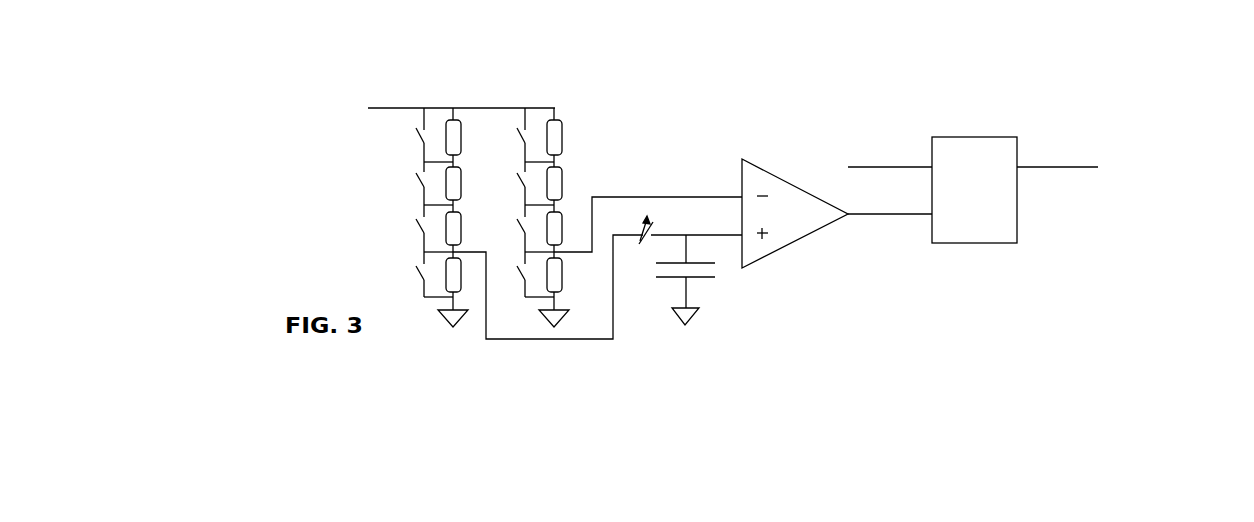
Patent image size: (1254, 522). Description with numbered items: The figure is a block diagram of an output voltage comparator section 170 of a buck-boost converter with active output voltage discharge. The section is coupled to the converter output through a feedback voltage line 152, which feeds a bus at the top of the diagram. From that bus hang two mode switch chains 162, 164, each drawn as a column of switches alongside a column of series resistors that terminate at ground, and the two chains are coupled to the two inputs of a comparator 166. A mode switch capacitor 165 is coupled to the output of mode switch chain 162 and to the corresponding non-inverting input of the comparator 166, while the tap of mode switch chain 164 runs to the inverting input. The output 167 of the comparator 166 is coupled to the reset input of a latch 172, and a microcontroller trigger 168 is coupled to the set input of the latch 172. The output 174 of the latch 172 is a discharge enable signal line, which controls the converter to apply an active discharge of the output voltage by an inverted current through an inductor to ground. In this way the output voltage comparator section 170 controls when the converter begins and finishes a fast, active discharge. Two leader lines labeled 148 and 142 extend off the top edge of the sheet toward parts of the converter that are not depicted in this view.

The output voltage comparator section 170 is at (750, 176).
The feedback voltage line 152 is at (451, 133).
The mode switch chain 162 is at (442, 181).
The mode switch chain 164 is at (543, 181).
The mode switch capacitor 165 is at (700, 293).
The comparator 166 is at (795, 198).
The output of the comparator 167 is at (890, 252).
The microcontroller trigger 168 is at (870, 120).
The latch 172 is at (974, 158).
The output of latch 174 is at (1117, 193).
The upper circuit connection 148 is at (857, 0).
The upper circuit connection 142 is at (1013, 0).